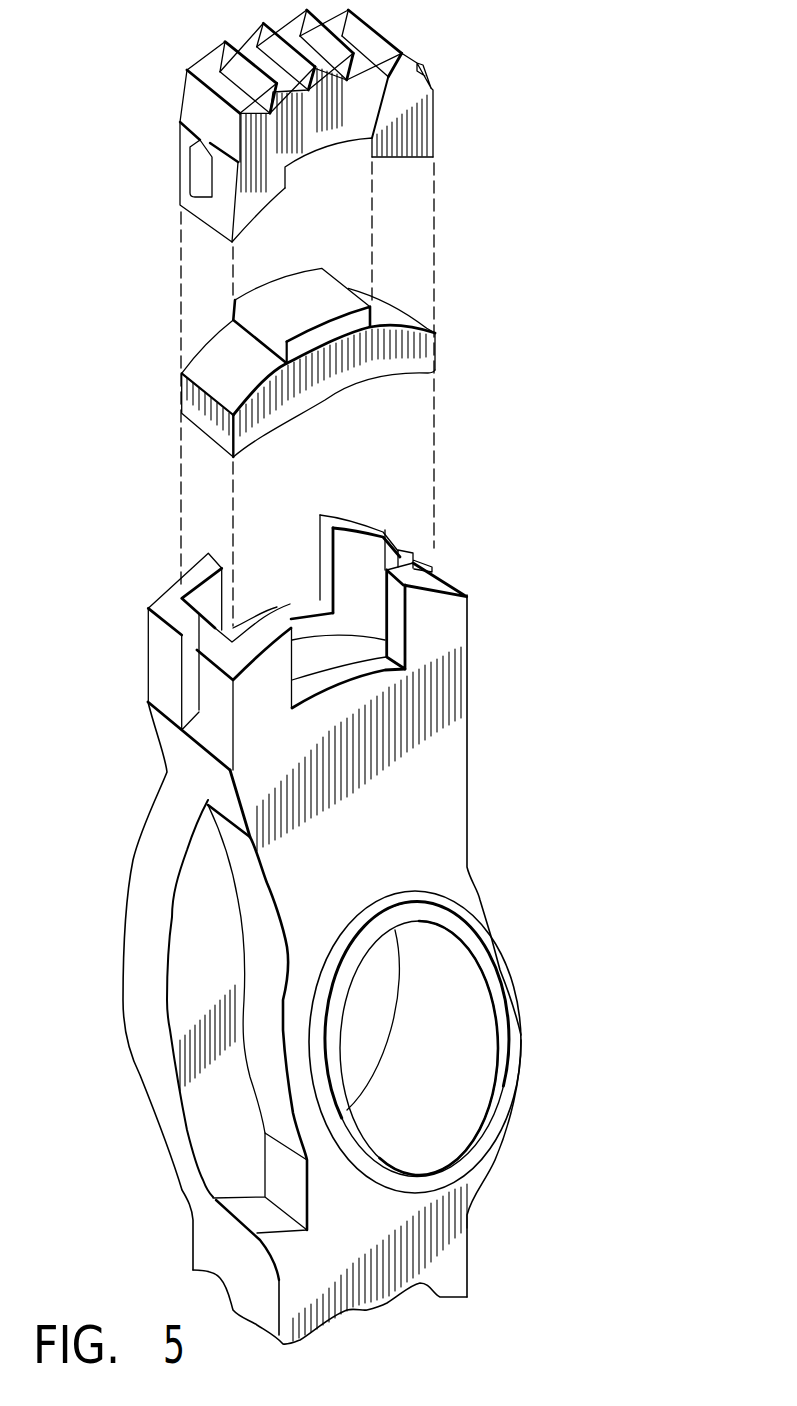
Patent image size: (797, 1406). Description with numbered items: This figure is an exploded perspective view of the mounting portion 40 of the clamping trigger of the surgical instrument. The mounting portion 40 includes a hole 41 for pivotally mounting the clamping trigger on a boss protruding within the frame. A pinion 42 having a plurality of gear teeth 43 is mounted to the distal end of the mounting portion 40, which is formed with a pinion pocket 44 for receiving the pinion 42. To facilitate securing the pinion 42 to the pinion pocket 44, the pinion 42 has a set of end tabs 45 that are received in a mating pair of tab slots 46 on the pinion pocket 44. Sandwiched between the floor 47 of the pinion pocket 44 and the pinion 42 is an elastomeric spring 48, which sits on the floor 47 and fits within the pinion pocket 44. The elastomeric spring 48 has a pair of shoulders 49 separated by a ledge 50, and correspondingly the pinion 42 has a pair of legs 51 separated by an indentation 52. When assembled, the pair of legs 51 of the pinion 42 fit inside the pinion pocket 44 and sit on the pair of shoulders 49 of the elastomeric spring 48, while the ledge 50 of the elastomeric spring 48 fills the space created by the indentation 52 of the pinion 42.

The mounting portion 40 is at (401, 910).
The hole 41 is at (475, 1000).
The pinion 42 is at (311, 144).
The gear teeth 43 is at (247, 57).
The pinion pocket 44 is at (357, 590).
The end tabs 45 is at (203, 203).
The tab slots 46 is at (188, 672).
The floor 47 is at (313, 652).
The elastomeric spring 48 is at (281, 345).
The shoulders 49 is at (212, 375).
The ledge 50 is at (267, 297).
The legs 51 is at (250, 230).
The indentation 52 is at (308, 157).